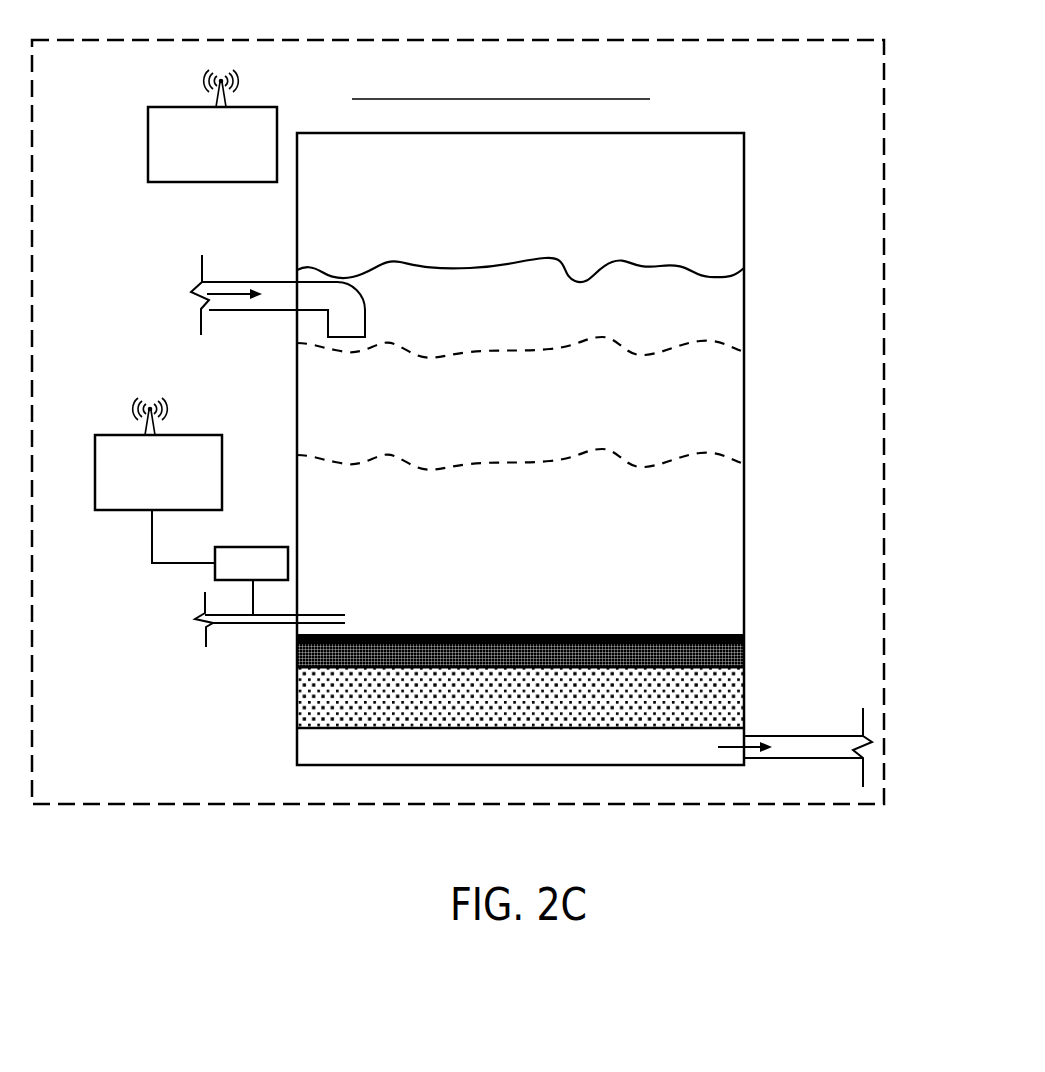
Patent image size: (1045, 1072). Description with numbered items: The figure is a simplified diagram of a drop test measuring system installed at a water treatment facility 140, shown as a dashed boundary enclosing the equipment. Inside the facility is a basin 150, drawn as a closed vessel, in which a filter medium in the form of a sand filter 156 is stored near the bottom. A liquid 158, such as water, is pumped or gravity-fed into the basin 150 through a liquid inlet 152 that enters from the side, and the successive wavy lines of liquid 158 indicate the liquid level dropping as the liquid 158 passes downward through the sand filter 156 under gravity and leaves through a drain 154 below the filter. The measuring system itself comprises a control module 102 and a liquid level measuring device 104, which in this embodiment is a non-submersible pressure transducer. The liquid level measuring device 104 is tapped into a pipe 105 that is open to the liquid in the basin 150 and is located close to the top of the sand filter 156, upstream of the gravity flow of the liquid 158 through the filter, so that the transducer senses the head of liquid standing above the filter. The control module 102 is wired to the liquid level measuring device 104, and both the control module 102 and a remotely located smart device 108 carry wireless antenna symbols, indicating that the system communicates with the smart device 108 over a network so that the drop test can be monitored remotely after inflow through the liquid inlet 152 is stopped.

The water treatment facility 140 is at (490, 410).
The basin 150 is at (548, 421).
The smart device 108 is at (186, 126).
The control module 102 is at (132, 480).
The liquid level measuring device 104 is at (224, 569).
The pipe 105 is at (270, 637).
The liquid inlet 152 is at (278, 315).
The drain 154 is at (746, 734).
The sand filter 156 is at (541, 680).
The liquid 158 is at (613, 263).